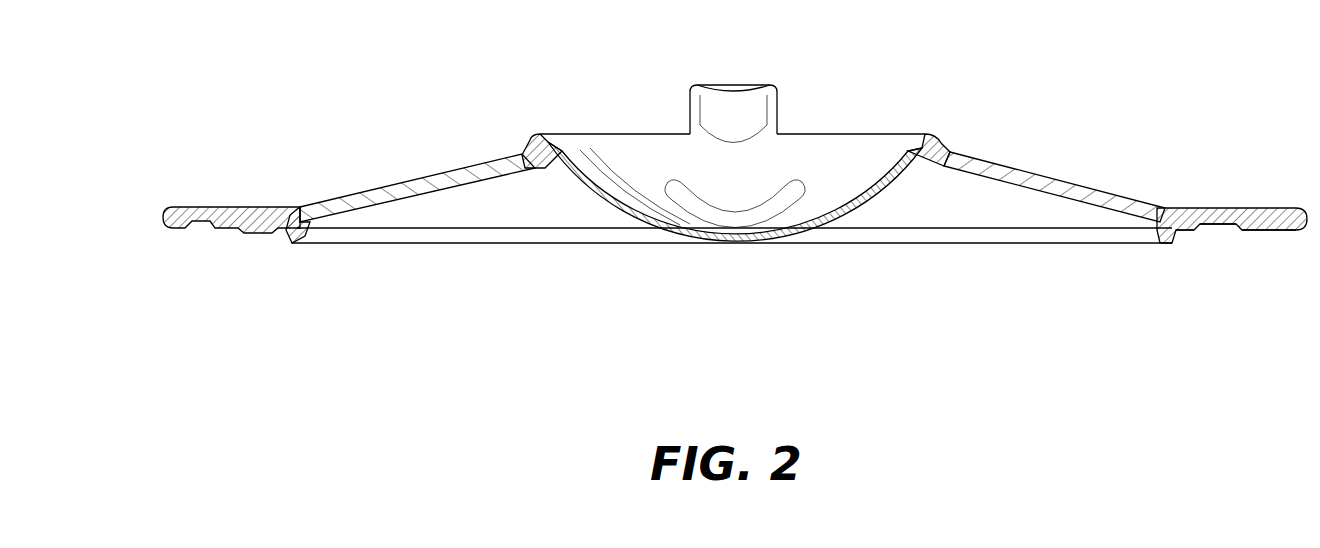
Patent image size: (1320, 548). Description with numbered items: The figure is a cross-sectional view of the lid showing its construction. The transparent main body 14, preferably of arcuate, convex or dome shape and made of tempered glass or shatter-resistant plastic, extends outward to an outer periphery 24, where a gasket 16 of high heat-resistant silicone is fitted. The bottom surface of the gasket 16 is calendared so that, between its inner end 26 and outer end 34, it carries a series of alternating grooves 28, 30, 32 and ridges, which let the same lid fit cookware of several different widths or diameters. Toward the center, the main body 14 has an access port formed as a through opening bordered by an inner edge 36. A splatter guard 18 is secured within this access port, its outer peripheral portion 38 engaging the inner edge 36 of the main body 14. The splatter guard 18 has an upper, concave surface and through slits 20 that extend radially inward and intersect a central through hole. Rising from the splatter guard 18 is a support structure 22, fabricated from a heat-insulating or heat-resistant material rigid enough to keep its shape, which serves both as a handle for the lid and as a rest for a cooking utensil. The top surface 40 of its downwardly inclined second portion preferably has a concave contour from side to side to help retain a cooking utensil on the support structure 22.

The main body 14 is at (1050, 185).
The gasket 16 is at (1220, 210).
The splatter guard 18 is at (847, 146).
The through slits 20 is at (787, 210).
The support structure 22 is at (778, 99).
The outer periphery 24 is at (297, 228).
The inner end 26 is at (296, 237).
The groove 28 is at (1190, 231).
The groove 30 is at (1235, 231).
The groove 32 is at (1273, 231).
The outer end 34 is at (163, 216).
The inner edge 36 is at (552, 163).
The outer peripheral portion 38 is at (528, 146).
The top surface 40 is at (733, 108).